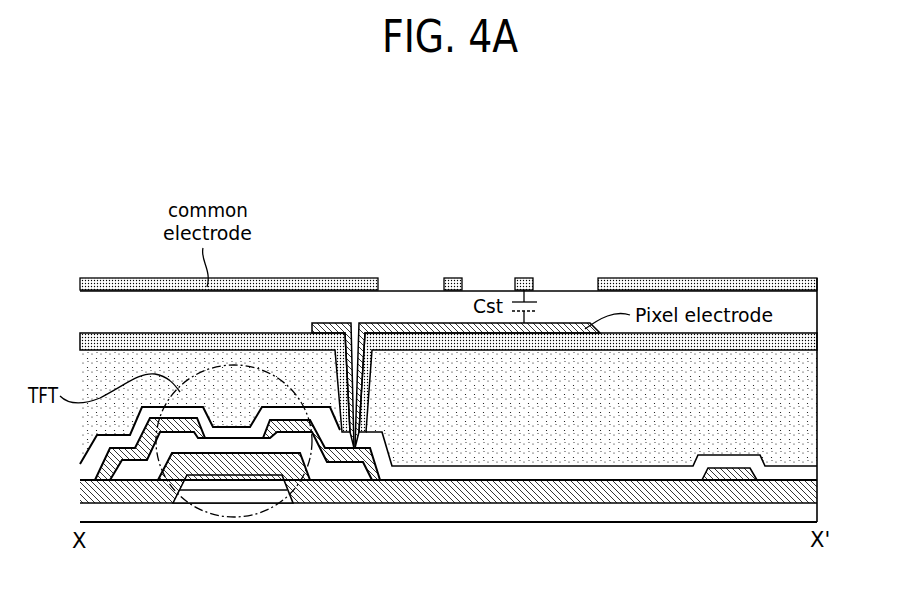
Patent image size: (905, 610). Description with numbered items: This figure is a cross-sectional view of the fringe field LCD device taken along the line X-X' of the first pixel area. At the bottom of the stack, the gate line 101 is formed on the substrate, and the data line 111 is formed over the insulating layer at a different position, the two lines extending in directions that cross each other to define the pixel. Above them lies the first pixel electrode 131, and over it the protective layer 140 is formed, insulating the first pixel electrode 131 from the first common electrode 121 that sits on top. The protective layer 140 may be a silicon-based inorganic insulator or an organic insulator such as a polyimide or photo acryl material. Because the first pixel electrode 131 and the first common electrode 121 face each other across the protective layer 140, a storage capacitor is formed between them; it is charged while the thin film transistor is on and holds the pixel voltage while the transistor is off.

The gate line 101 is at (232, 483).
The data line 111 is at (722, 481).
The first common electrode 121 is at (523, 278).
The first pixel electrode 131 is at (430, 323).
The protective layer 140 is at (793, 310).